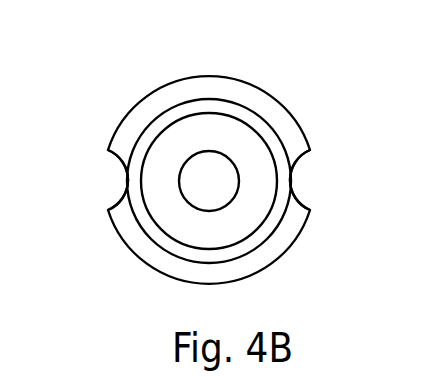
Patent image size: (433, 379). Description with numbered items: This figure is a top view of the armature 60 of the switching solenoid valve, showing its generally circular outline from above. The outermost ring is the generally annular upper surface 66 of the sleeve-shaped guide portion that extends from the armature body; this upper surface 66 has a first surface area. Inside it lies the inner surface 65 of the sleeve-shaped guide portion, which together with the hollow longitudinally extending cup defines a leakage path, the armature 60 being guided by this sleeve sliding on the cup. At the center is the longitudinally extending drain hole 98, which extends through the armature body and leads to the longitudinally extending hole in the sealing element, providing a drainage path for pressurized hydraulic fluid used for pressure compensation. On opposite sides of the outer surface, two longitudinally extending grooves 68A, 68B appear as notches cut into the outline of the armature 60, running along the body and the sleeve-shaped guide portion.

The armature 60 is at (299, 256).
The inner surface 65 is at (178, 126).
The annular upper surface 66 is at (243, 95).
The longitudinally extending drain hole 98 is at (220, 173).
The longitudinally extending groove 68A is at (306, 180).
The longitudinally extending groove 68B is at (104, 184).